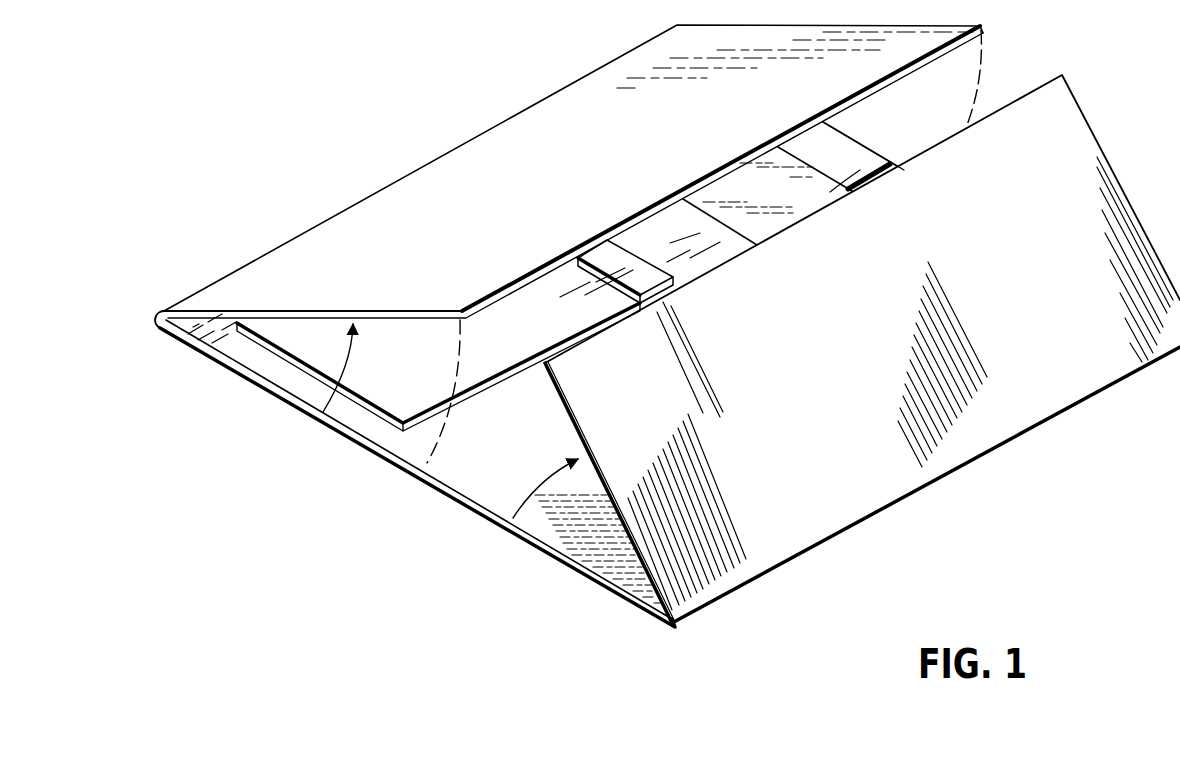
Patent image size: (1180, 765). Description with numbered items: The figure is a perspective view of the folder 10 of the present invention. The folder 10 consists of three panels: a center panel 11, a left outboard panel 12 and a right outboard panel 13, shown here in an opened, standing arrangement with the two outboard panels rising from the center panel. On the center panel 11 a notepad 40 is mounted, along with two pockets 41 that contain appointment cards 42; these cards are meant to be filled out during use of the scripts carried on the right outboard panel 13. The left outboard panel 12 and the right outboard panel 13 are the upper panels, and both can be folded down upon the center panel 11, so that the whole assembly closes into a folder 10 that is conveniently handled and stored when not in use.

The folder 10 is at (346, 104).
The center panel 11 is at (497, 503).
The left outboard panel 12 is at (590, 163).
The right outboard panel 13 is at (820, 307).
The notepad 40 is at (388, 404).
The pockets 41 is at (892, 160).
The appointment cards 42 is at (847, 148).